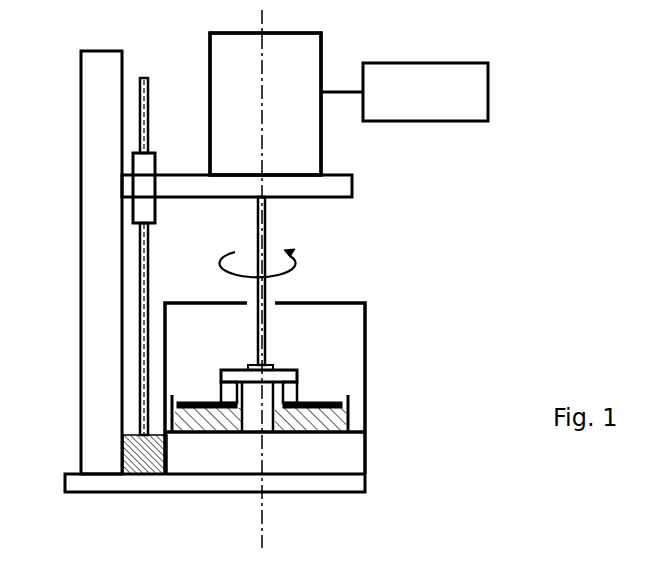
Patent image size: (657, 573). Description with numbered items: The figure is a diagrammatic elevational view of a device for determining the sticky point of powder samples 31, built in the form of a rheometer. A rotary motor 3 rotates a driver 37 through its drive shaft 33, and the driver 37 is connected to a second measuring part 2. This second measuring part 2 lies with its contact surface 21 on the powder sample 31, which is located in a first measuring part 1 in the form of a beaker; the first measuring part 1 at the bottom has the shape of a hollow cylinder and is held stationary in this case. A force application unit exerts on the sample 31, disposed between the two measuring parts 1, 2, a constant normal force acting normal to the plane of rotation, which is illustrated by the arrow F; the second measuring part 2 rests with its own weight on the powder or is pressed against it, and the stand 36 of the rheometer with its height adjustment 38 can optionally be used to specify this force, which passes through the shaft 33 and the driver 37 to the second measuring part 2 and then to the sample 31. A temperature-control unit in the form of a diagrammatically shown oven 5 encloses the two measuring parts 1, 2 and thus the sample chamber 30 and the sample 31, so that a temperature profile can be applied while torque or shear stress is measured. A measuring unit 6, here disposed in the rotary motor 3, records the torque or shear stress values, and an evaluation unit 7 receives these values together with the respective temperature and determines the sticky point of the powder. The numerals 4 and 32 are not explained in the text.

The first measuring part 1 is at (124, 436).
The second measuring part 2 is at (332, 417).
The rotary motor 3 is at (265, 104).
The measuring unit 4 is at (265, 104).
The oven 5 is at (345, 357).
The measuring unit 6 is at (265, 104).
The evaluation unit 7 is at (373, 535).
The contact surface 21 is at (350, 426).
The sample chamber 30 is at (300, 434).
The powder sample 31 is at (205, 422).
The support block / base 32 is at (242, 493).
The drive shaft 33 is at (266, 241).
The stand 36 is at (98, 83).
The driver 37 is at (293, 368).
The height adjustment 38 is at (134, 187).
The arrow F is at (262, 429).